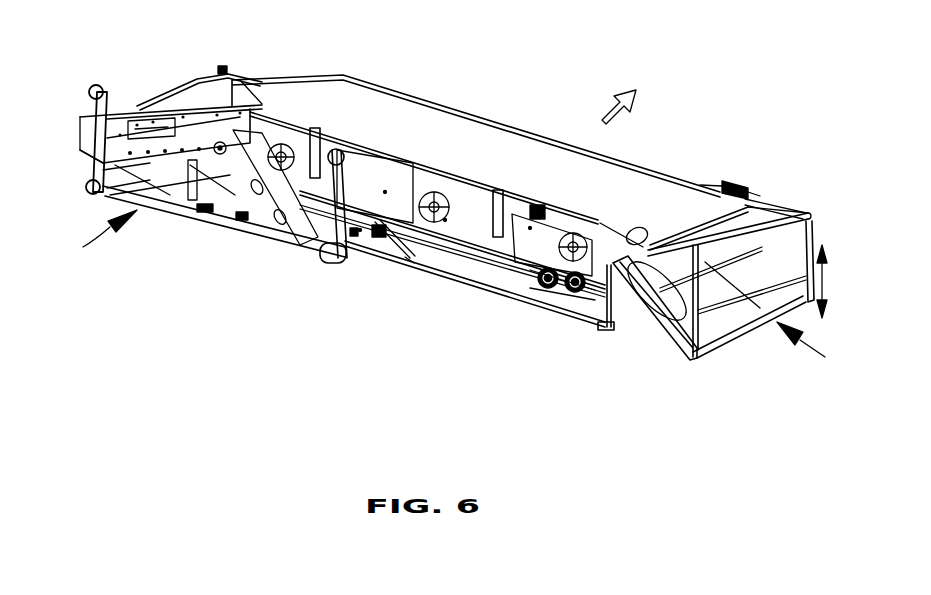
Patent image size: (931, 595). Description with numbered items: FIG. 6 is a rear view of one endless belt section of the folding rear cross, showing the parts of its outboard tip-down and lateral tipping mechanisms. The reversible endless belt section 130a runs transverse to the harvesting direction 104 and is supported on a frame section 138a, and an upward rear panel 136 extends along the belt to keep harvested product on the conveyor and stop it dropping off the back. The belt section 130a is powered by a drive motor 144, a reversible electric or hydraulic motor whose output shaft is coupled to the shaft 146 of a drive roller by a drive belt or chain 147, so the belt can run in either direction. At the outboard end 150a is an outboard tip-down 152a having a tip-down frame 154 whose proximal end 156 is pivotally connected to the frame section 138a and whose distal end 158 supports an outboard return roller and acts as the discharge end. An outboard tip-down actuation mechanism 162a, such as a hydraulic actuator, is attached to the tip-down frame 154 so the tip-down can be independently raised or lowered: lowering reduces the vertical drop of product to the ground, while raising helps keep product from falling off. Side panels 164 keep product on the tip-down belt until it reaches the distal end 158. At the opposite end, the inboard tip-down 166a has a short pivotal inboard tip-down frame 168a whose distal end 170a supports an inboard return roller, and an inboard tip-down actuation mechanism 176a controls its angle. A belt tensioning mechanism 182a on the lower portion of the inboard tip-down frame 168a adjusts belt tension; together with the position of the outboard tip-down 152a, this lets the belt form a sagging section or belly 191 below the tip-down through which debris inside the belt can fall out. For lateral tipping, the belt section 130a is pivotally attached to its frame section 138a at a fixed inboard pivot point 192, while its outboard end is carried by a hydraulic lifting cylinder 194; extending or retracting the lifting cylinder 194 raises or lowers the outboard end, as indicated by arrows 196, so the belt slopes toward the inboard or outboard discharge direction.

The harvesting direction 104 is at (630, 120).
The endless belt section 130a is at (373, 107).
The upward rear panel 136 is at (87, 133).
The frame section 138a is at (360, 263).
The drive motor 144 is at (605, 283).
The shaft 146 is at (577, 310).
The drive belt or chain 147 is at (603, 297).
The outboard end 150a is at (764, 287).
The outboard tip-down 152a is at (780, 203).
The tip-down frame 154 is at (667, 354).
The proximal end 156 is at (741, 187).
The distal end 158 is at (740, 337).
The outboard tip-down actuation mechanism 162a is at (539, 205).
The side panels 164 is at (814, 242).
The inboard tip-down 166a is at (248, 93).
The inboard tip-down frame 168a is at (92, 194).
The distal end 170a is at (178, 101).
The inboard tip-down actuation mechanism 176a is at (220, 207).
The belt tensioning mechanism 182a is at (83, 234).
The sagging section 191 is at (640, 340).
The fixed inboard pivot point 192 is at (272, 113).
The hydraulic lifting cylinder 194 is at (603, 330).
The arrows 196 is at (826, 284).